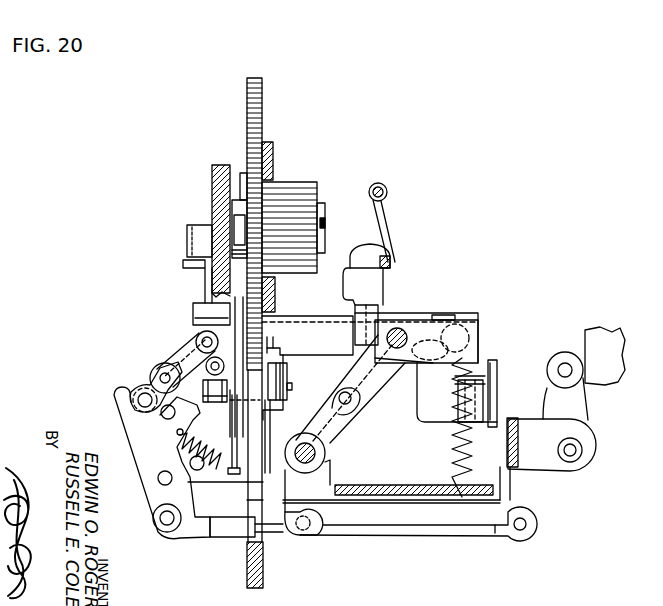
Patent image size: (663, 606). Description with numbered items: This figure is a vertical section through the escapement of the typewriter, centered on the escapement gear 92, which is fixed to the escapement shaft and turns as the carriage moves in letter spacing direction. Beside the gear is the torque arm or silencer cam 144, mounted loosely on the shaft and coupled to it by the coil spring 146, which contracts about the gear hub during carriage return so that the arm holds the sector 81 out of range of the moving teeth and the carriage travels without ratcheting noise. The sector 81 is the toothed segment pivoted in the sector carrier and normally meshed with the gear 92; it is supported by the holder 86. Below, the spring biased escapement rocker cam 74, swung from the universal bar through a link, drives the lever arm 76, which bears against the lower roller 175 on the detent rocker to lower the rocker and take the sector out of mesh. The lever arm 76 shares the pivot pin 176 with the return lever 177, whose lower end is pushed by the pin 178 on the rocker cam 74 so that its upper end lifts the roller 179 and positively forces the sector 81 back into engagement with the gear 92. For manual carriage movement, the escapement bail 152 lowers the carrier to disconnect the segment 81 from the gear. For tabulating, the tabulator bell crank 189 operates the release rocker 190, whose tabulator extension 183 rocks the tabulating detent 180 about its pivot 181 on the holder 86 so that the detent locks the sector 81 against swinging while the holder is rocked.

The escapement gear 92 is at (263, 90).
The torque arm 144 is at (244, 173).
The coil spring 146 is at (238, 200).
The roller 179 is at (200, 307).
The return lever 177 is at (172, 348).
The pivot pin 176 is at (162, 374).
The lever arm 76 is at (145, 392).
The escapement rocker cam 74 is at (122, 418).
The pin 178 is at (165, 416).
The lower roller 175 is at (216, 408).
The tabulator extension 183 is at (268, 340).
The tabulating detent 180 is at (278, 352).
The pivot 181 is at (293, 386).
The sector 81 is at (257, 451).
The holder 86 is at (235, 481).
The escapement bail 152 is at (390, 228).
The release rocker 190 is at (490, 326).
The tabulator bell crank 189 is at (497, 366).